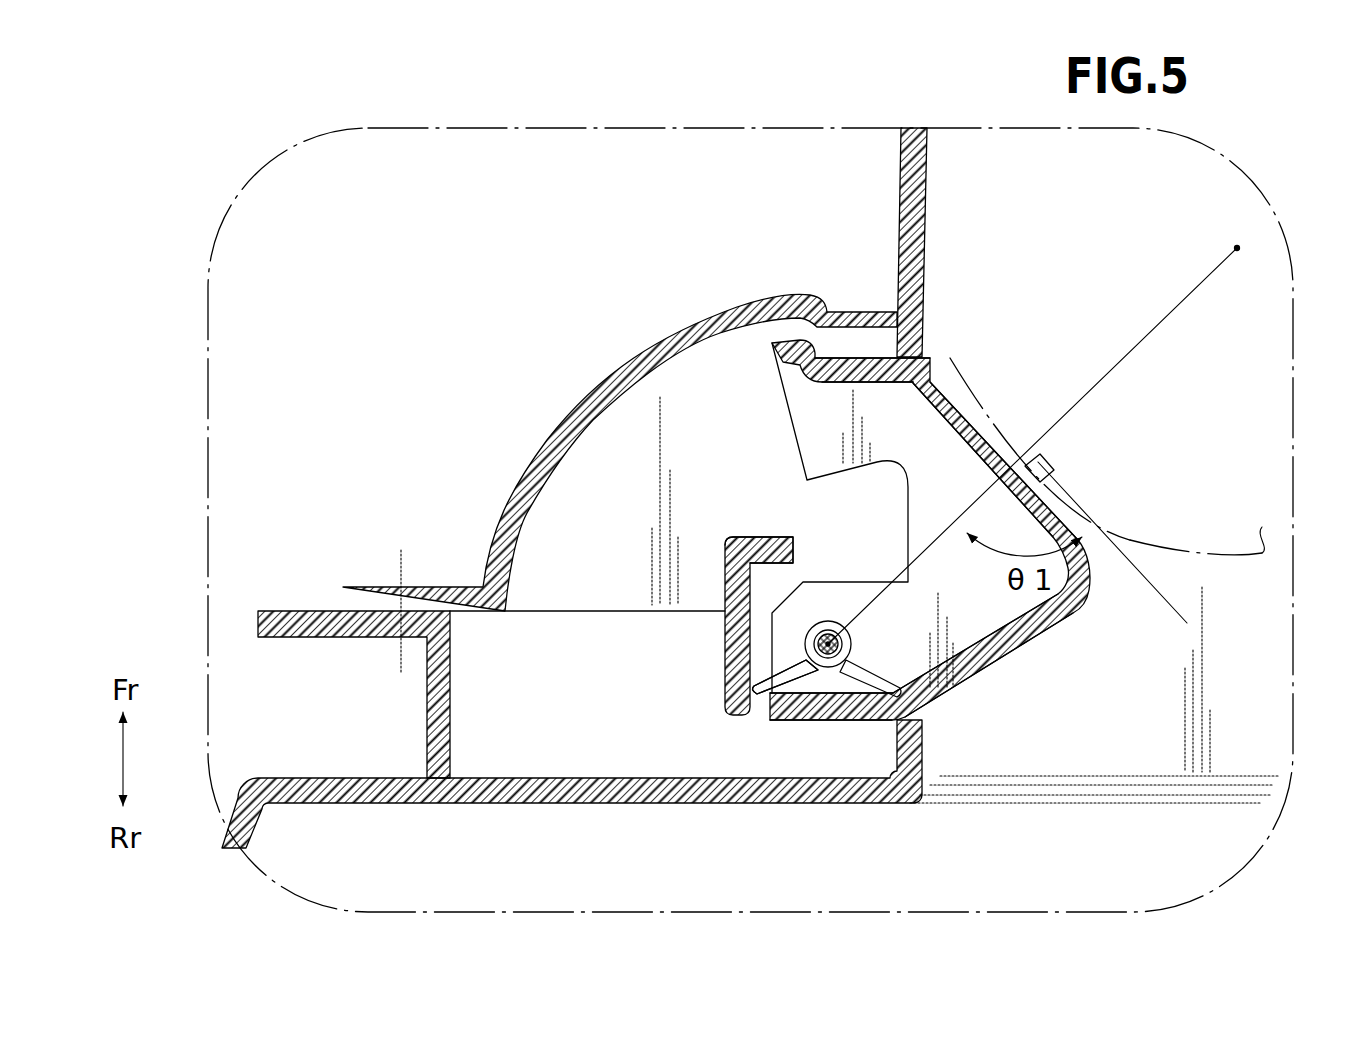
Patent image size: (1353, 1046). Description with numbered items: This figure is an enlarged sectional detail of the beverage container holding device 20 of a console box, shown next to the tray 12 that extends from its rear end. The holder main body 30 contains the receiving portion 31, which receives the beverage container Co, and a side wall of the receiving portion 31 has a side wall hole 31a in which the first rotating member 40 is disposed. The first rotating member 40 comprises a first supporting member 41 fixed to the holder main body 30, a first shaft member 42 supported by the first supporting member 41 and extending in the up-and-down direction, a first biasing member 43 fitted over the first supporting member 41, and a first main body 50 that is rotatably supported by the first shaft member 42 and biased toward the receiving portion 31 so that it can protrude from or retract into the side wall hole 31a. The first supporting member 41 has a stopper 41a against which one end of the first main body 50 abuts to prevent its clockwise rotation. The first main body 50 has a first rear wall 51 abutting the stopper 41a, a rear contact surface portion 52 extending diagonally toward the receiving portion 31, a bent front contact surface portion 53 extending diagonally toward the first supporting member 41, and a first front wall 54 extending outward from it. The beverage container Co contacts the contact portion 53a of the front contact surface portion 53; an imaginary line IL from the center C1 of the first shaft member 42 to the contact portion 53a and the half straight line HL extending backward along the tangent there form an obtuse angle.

The beverage container holding device 20 is at (313, 84).
The tray 12 is at (532, 897).
The holder main body 30 is at (893, 122).
The receiving portion 31 is at (1112, 233).
The side wall hole 31a is at (943, 357).
The first rotating member 40 is at (1015, 855).
The first supporting member 41 is at (722, 680).
The stopper 41a is at (786, 686).
The first shaft member 42 is at (866, 664).
The first biasing member 43 is at (806, 690).
The first main body 50 is at (960, 696).
The first rear wall 51 is at (840, 722).
The rear contact surface portion 52 is at (1021, 647).
The front contact surface portion 53 is at (958, 413).
The contact portion 53a is at (1023, 467).
The first front wall 54 is at (852, 357).
The center of the first shaft member C1 is at (830, 620).
The imaginary line IL is at (958, 537).
The half straight line HL is at (1153, 597).
The beverage container Co is at (1220, 560).